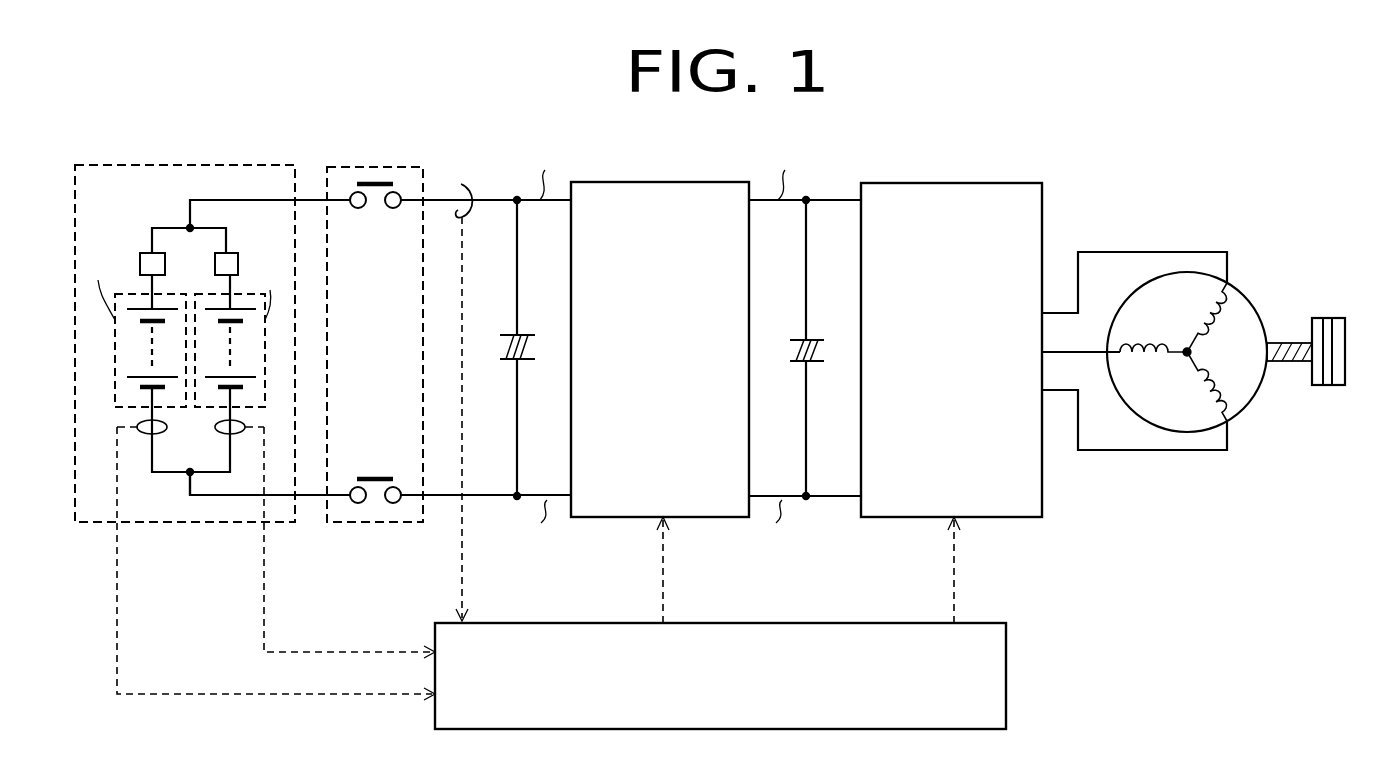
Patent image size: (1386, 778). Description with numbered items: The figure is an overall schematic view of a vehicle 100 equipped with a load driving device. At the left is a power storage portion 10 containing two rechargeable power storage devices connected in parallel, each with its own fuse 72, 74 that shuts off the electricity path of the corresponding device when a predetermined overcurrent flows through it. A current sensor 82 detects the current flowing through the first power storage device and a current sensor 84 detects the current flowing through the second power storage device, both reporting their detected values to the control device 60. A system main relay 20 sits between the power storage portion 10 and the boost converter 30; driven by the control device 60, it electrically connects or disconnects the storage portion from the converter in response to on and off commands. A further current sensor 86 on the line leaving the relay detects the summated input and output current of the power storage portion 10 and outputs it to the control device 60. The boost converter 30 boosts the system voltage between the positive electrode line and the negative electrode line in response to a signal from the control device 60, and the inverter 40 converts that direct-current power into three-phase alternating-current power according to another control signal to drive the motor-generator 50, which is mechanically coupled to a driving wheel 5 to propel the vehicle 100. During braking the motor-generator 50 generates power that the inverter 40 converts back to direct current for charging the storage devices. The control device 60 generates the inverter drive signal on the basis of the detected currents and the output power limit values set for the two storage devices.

The vehicle 100 is at (1232, 177).
The power storage portion 10 is at (238, 165).
The system main relay 20 is at (377, 167).
The boost converter 30 is at (660, 182).
The inverter 40 is at (1000, 183).
The motor-generator 50 is at (1245, 292).
The drive wheel 5 is at (1333, 318).
The control device 60 is at (830, 623).
The fuse 72 is at (152, 253).
The fuse 74 is at (232, 253).
The current sensor 82 is at (145, 434).
The current sensor 84 is at (237, 434).
The current sensor 86 is at (462, 184).